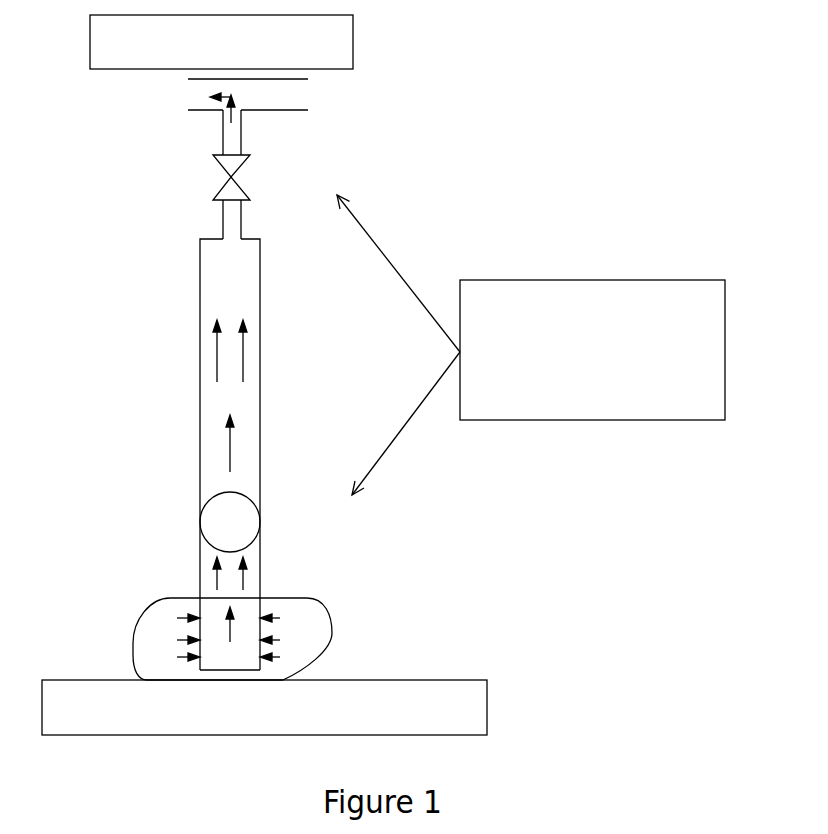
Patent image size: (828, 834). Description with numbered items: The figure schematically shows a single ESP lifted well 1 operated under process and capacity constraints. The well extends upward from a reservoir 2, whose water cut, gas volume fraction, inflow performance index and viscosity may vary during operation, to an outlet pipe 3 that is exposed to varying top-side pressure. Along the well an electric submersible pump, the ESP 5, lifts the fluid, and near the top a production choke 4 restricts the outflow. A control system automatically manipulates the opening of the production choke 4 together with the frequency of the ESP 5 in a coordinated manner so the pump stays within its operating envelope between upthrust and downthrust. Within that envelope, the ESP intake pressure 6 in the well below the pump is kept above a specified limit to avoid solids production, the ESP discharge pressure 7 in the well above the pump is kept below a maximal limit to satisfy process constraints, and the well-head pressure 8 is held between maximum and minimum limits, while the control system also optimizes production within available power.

The ESP lifted well 1 is at (121, 352).
The reservoir 2 is at (303, 627).
The outlet pipe 3 is at (293, 95).
The production choke 4 is at (208, 192).
The ESP 5 is at (213, 540).
The ESP intake pressure 6 is at (248, 555).
The ESP discharge pressure 7 is at (260, 478).
The well-head pressure 8 is at (223, 280).